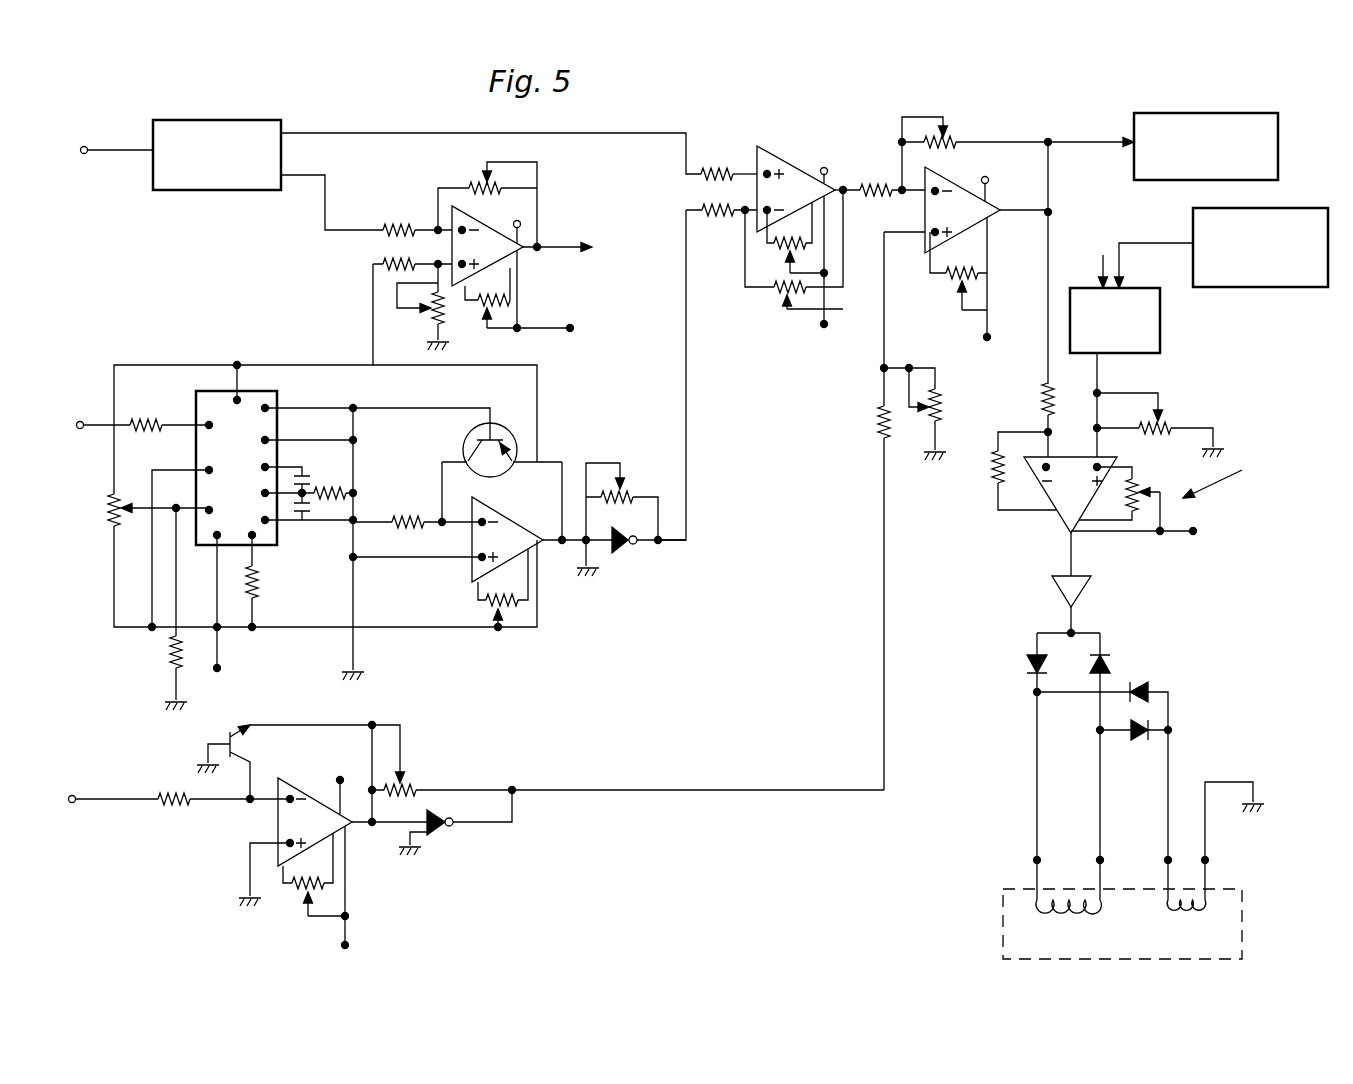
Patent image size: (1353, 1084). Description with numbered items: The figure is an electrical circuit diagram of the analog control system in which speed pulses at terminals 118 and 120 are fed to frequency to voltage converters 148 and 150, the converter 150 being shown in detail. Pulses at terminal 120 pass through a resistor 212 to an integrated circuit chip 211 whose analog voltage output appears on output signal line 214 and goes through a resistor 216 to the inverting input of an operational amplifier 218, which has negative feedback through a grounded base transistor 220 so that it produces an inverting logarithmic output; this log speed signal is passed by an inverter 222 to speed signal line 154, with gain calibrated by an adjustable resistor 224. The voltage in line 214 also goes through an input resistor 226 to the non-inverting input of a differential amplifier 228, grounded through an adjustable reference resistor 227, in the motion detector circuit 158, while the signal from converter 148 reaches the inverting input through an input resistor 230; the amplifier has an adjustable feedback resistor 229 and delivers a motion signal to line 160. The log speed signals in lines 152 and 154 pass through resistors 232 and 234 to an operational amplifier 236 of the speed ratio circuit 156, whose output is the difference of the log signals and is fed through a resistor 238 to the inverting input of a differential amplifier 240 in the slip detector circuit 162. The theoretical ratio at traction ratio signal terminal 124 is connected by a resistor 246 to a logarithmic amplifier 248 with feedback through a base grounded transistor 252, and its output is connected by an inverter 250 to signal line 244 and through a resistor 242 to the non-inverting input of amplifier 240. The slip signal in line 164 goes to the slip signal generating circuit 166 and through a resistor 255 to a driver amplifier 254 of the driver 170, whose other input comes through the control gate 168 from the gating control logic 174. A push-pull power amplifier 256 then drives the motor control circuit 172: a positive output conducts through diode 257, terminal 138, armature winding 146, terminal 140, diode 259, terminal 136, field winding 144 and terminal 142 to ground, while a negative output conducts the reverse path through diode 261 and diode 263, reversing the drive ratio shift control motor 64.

The drive ratio shift control motor 64 is at (1003, 935).
The speed signal terminal 118 is at (92, 156).
The speed signal terminal 120 is at (80, 432).
The traction ratio signal terminal 124 is at (74, 792).
The control terminal 136 is at (1165, 858).
The control terminal 138 is at (1033, 858).
The control terminal 140 is at (1098, 858).
The ground terminal 142 is at (1210, 858).
The field winding 144 is at (1198, 912).
The armature winding 146 is at (1095, 912).
The frequency to voltage converter 148 is at (210, 180).
The frequency to voltage converter 150 is at (395, 645).
The speed signal line 152 is at (667, 136).
The speed signal line 154 is at (690, 418).
The speed ratio circuit 156 is at (864, 320).
The motion detector circuit 158 is at (550, 195).
The motion signal line 160 is at (571, 245).
The slip detector circuit 162 is at (968, 448).
The slip signal line 164 is at (1048, 248).
The slip signal generating circuit 166 is at (1160, 113).
The control gate 168 is at (1160, 333).
The driver 170 is at (1034, 566).
The motor control circuit 172 is at (1198, 718).
The gating control logic 174 is at (1303, 272).
The integrated circuit chip 211 is at (268, 397).
The resistor 212 is at (148, 410).
The output signal line 214 is at (322, 522).
The resistor 216 is at (412, 530).
The operational amplifier 218 is at (510, 547).
The grounded base transistor 220 is at (508, 427).
The inverter 222 is at (622, 548).
The adjustable resistor 224 is at (634, 486).
The input resistor 226 is at (373, 264).
The adjustable reference resistor 227 is at (445, 322).
The differential amplifier 228 is at (502, 257).
The adjustable feedback resistor 229 is at (480, 178).
The input resistor 230 is at (393, 222).
The resistor 232 is at (727, 160).
The resistor 234 is at (716, 228).
The operational amplifier 236 is at (773, 148).
The resistor 238 is at (870, 182).
The differential amplifier 240 is at (928, 240).
The resistor 242 is at (880, 422).
The signal line 244 is at (878, 714).
The resistor 246 is at (163, 815).
The logarithmic amplifier 248 is at (347, 840).
The inverter 250 is at (440, 830).
The base grounded transistor 252 is at (238, 765).
The driver amplifier 254 is at (1063, 525).
The resistor 255 is at (1040, 397).
The push-pull power amplifier 256 is at (1083, 590).
The diode 257 is at (1027, 660).
The diode 259 is at (1138, 741).
The diode 261 is at (1140, 685).
The diode 263 is at (1108, 660).